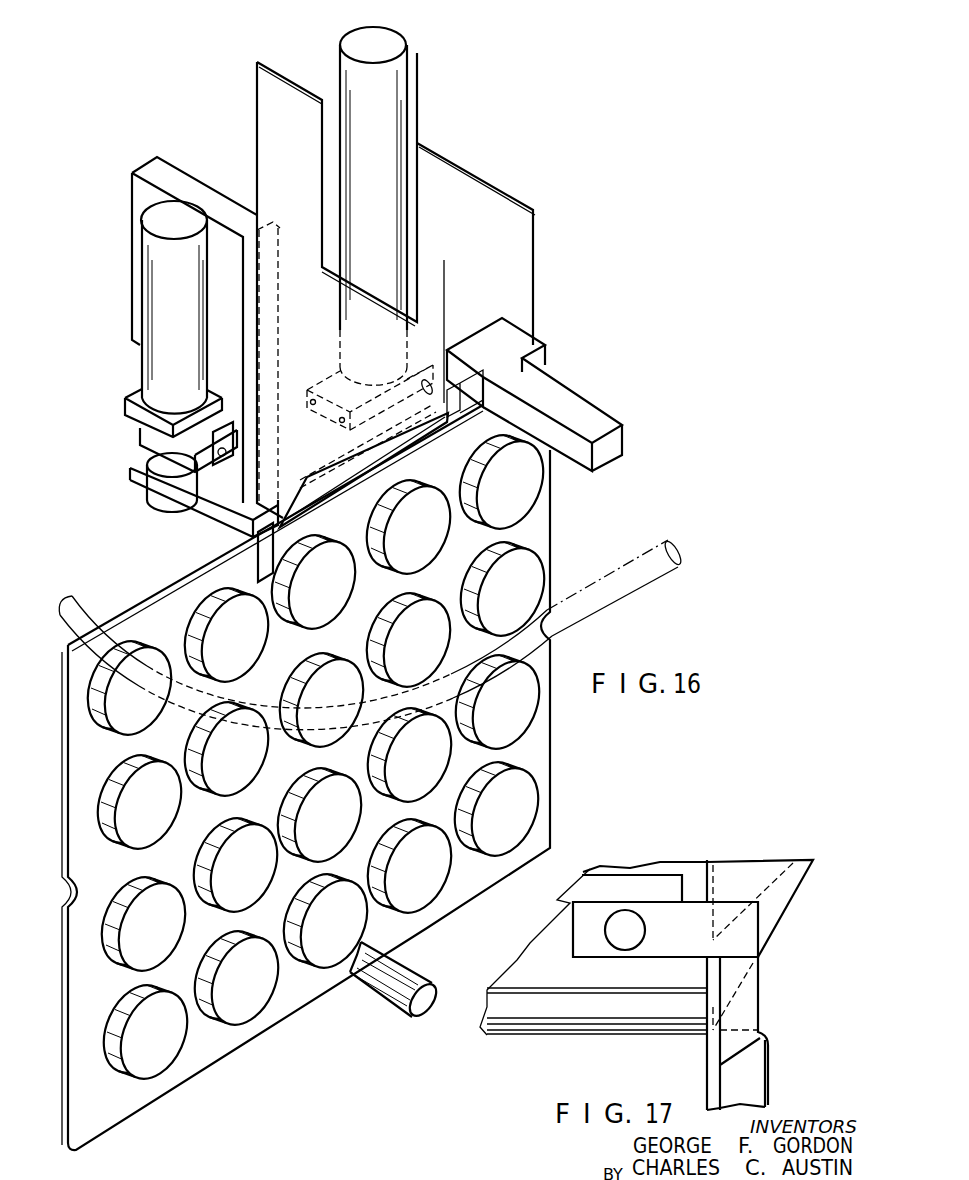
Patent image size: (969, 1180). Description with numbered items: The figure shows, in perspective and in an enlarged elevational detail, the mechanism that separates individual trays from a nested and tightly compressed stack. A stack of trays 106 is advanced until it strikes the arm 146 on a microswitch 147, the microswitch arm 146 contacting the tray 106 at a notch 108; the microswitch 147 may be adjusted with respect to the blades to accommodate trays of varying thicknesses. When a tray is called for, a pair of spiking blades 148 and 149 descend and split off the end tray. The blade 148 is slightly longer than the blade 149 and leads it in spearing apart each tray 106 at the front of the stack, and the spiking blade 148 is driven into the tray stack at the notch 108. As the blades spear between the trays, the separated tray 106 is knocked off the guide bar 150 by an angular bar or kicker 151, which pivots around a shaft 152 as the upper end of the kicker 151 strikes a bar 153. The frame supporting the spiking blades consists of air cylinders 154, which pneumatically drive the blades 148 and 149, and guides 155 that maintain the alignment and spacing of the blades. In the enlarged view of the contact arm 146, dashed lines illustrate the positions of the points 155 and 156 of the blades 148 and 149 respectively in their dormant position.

In FIG. 16, the tray 106 is at (258, 1018).
In FIG. 16, the notch 108 is at (252, 545).
In FIG. 16, the microswitch arm 146 is at (282, 534).
In FIG. 17, the microswitch arm 146 is at (740, 1013).
In FIG. 16, the microswitch 147 is at (225, 453).
In FIG. 16, the spiking blade 148 is at (330, 372).
In FIG. 16, the spiking blade 149 is at (515, 266).
In FIG. 17, the spiking blade 149 is at (745, 885).
In FIG. 16, the guide bar 150 is at (403, 990).
In FIG. 16, the kicker 151 is at (590, 418).
In FIG. 16, the shaft 152 is at (428, 380).
In FIG. 16, the bar 153 is at (660, 578).
In FIG. 16, the air cylinder 154 is at (388, 47).
In FIG. 16, the guide 155 is at (249, 232).
In FIG. 17, the guide 155 is at (712, 1037).
In FIG. 17, the point 156 is at (725, 938).